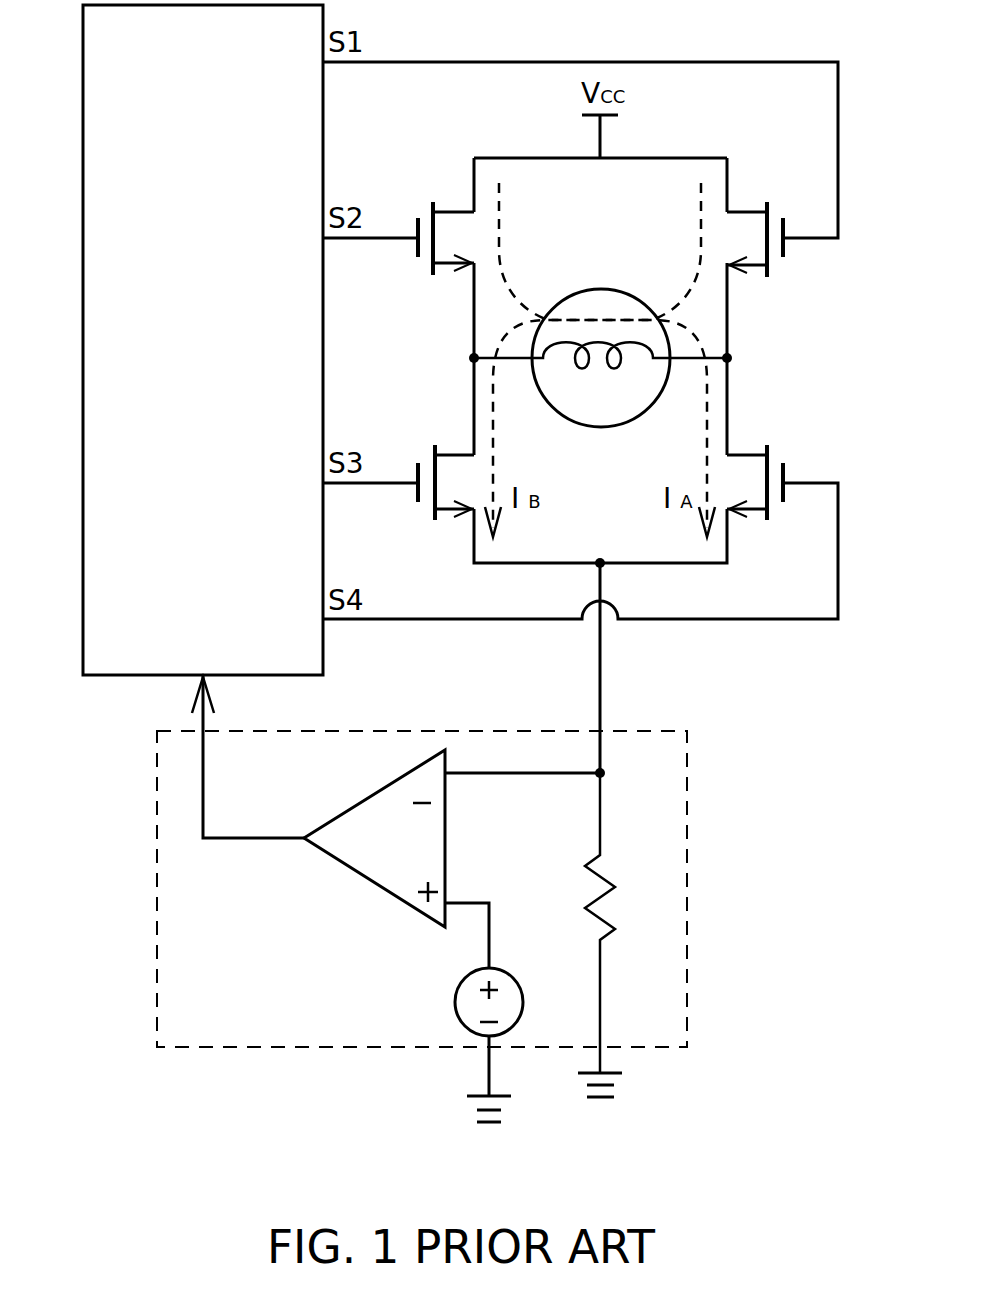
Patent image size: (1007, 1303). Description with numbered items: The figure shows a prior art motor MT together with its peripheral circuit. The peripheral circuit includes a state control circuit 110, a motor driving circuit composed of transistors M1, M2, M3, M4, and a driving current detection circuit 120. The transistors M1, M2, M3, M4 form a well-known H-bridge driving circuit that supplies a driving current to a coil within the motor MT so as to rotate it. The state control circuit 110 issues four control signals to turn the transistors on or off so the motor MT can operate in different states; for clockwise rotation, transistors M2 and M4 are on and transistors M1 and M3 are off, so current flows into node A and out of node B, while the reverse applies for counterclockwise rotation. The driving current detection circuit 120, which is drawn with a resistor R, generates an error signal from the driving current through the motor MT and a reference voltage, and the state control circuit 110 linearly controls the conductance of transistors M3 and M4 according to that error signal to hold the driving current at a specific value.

The state control circuit 110 is at (103, 677).
The driving current detection circuit 120 is at (422, 906).
The transistor M1 is at (761, 222).
The transistor M2 is at (445, 221).
The transistor M3 is at (425, 473).
The transistor M4 is at (776, 474).
The motor MT is at (601, 379).
The resistor R is at (614, 935).